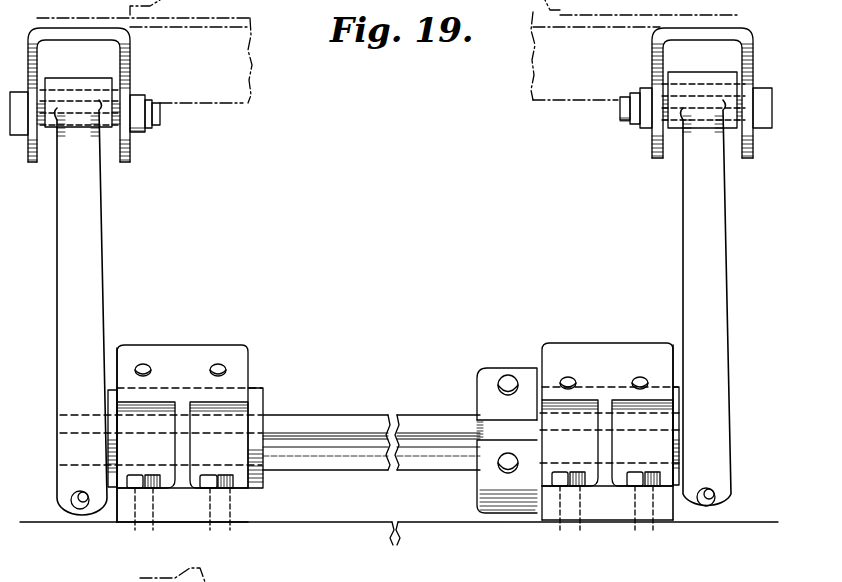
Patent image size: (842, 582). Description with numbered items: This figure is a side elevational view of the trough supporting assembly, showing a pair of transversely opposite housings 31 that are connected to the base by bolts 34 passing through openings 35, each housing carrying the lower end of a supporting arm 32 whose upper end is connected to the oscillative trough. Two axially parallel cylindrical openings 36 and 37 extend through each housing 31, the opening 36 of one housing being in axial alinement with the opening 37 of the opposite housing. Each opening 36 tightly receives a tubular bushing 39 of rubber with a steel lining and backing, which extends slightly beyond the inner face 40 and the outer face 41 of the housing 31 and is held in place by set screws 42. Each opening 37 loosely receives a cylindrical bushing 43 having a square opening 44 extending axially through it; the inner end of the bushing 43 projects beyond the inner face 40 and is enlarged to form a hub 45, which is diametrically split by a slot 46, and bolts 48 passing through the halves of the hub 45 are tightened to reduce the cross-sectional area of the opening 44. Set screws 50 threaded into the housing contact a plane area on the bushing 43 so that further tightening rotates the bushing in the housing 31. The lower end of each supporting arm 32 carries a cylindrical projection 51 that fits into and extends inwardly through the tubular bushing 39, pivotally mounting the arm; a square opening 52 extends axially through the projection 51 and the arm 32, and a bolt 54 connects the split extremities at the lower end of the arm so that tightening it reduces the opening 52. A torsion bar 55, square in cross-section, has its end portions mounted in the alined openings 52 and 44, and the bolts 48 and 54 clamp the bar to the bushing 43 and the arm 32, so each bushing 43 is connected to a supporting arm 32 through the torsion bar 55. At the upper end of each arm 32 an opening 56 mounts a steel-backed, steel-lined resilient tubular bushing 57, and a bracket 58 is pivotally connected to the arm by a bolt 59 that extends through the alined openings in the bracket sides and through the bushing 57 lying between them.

The housing 31 is at (240, 380).
The supporting arm 32 is at (100, 266).
The bolt 34 is at (158, 490).
The opening 35 is at (137, 525).
The cylindrical opening 36 is at (179, 388).
The cylindrical opening 37 is at (609, 385).
The tubular bushing 39 is at (264, 390).
The inner face 40 is at (250, 352).
The outer face 41 is at (113, 355).
The set screw 42 is at (150, 365).
The cylindrical bushing 43 is at (474, 491).
The square opening 44 is at (625, 462).
The hub 45 is at (483, 384).
The slot 46 is at (492, 506).
The bolt 48 is at (506, 376).
The set screw 50 is at (570, 378).
The cylindrical projection 51 is at (108, 410).
The square opening 52 is at (258, 410).
The bolt 54 is at (72, 510).
The torsion bar 55 is at (349, 460).
The opening 56 is at (76, 90).
The resilient tubular bushing 57 is at (117, 90).
The bracket 58 is at (132, 154).
The bolt 59 is at (162, 118).